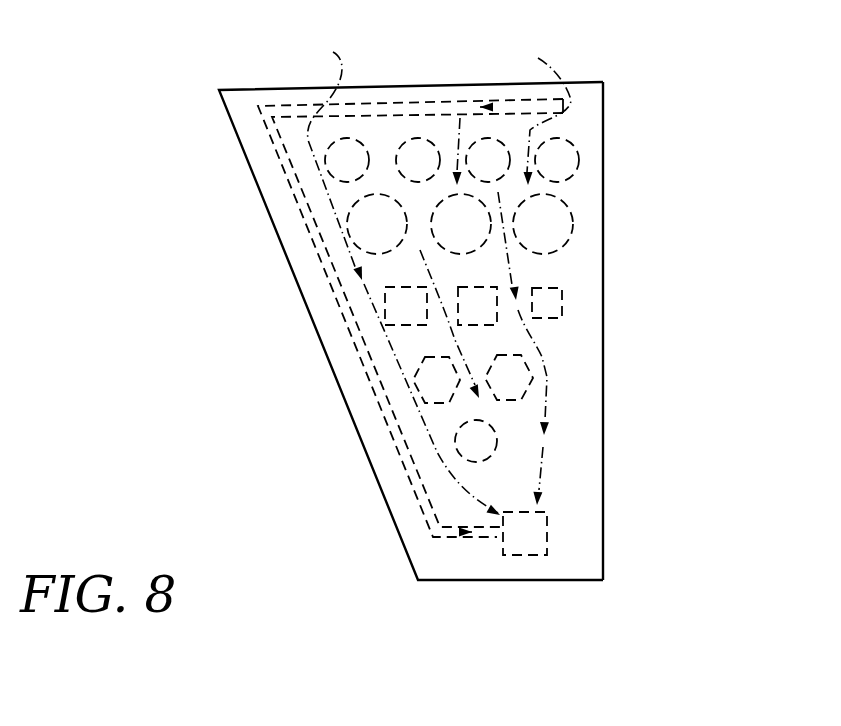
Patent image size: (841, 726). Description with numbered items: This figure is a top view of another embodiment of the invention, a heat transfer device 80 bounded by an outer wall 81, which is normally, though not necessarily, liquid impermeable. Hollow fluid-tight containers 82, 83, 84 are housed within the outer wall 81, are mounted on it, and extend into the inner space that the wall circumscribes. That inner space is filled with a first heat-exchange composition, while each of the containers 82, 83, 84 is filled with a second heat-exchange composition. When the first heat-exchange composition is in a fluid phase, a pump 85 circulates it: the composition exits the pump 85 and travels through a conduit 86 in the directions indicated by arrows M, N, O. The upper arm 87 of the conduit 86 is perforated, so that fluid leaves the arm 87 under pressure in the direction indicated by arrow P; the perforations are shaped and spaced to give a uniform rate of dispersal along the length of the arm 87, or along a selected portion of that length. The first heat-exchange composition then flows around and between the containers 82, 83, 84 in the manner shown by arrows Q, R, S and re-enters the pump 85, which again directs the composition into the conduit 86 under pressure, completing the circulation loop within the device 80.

The heat transfer device 80 is at (628, 93).
The outer wall 81 is at (593, 177).
The hollow fluid tight container 82 is at (573, 232).
The hollow fluid tight container 83 is at (562, 300).
The hollow fluid tight container 84 is at (515, 375).
The pump 85 is at (547, 535).
The conduit 86 is at (350, 352).
The upper arm 87 is at (413, 102).
The arrow M is at (483, 537).
The arrow N is at (338, 286).
The arrow O is at (404, 276).
The arrow P is at (512, 110).
The arrow Q is at (517, 277).
The arrow R is at (550, 378).
The arrow S is at (543, 450).